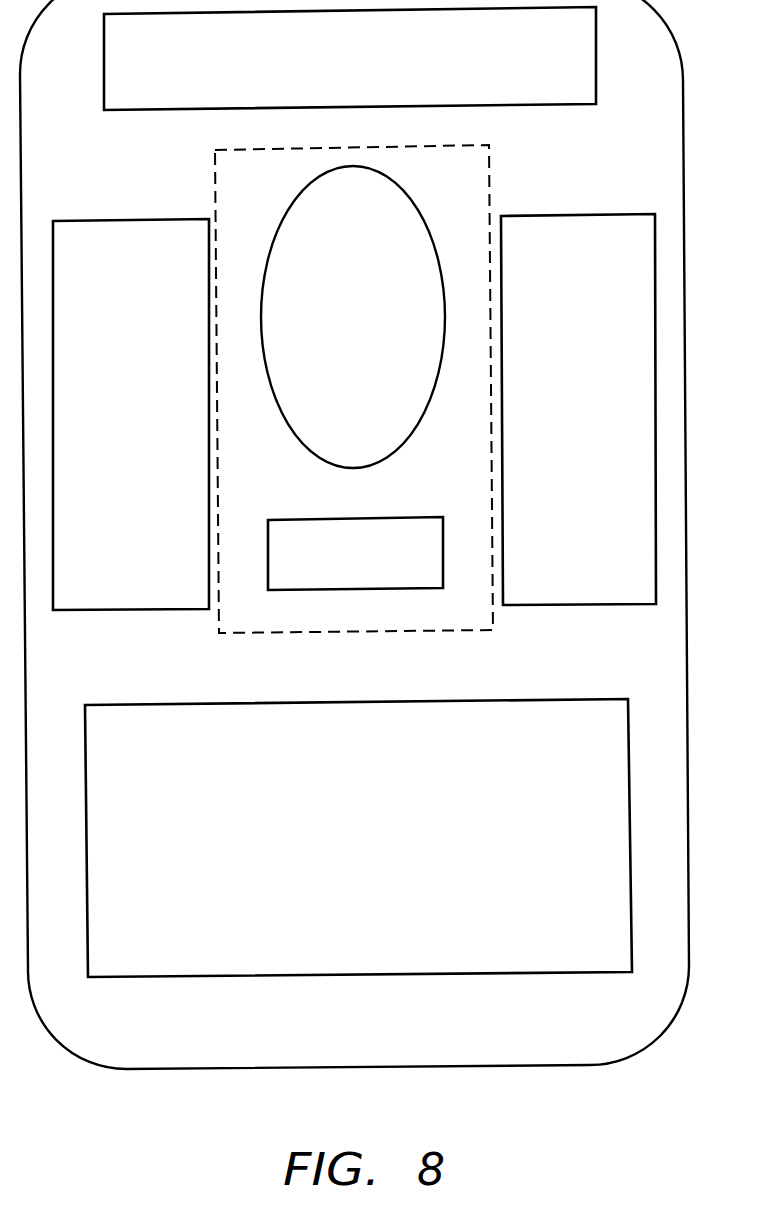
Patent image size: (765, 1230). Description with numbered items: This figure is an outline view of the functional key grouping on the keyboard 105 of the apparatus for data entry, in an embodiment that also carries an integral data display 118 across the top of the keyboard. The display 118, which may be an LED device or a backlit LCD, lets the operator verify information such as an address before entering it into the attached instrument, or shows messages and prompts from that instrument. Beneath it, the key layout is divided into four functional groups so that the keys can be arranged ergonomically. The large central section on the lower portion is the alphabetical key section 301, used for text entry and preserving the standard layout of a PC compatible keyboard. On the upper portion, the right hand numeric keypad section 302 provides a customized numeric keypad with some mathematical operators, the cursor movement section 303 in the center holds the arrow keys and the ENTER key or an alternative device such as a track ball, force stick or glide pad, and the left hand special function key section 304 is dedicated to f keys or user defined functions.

The keyboard 105 is at (382, 1034).
The data display 118 is at (372, 73).
The alphabetical key section 301 is at (380, 850).
The numeric keypad section 302 is at (598, 432).
The cursor movement section 303 is at (376, 504).
The special function key section 304 is at (150, 437).